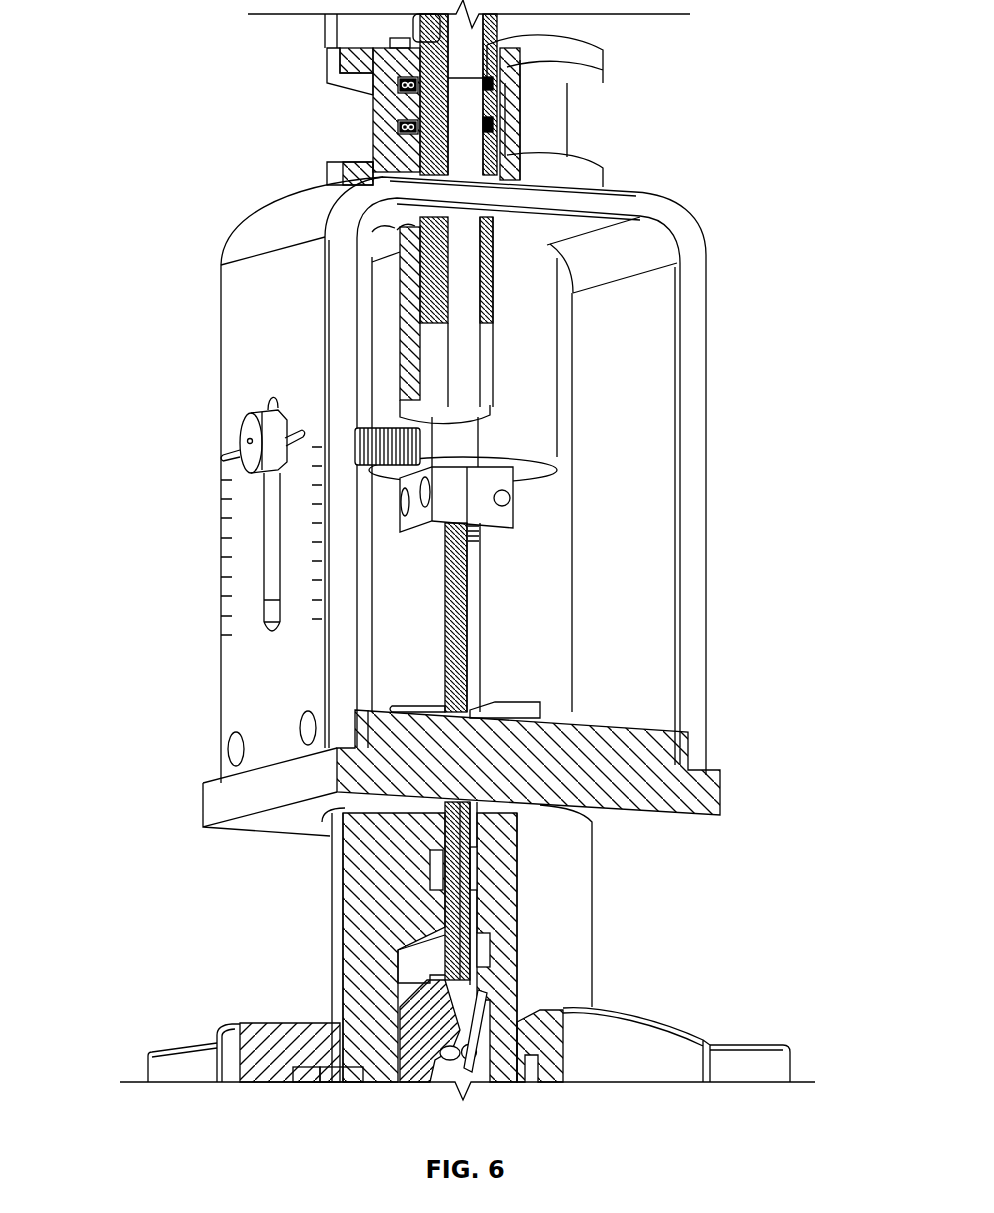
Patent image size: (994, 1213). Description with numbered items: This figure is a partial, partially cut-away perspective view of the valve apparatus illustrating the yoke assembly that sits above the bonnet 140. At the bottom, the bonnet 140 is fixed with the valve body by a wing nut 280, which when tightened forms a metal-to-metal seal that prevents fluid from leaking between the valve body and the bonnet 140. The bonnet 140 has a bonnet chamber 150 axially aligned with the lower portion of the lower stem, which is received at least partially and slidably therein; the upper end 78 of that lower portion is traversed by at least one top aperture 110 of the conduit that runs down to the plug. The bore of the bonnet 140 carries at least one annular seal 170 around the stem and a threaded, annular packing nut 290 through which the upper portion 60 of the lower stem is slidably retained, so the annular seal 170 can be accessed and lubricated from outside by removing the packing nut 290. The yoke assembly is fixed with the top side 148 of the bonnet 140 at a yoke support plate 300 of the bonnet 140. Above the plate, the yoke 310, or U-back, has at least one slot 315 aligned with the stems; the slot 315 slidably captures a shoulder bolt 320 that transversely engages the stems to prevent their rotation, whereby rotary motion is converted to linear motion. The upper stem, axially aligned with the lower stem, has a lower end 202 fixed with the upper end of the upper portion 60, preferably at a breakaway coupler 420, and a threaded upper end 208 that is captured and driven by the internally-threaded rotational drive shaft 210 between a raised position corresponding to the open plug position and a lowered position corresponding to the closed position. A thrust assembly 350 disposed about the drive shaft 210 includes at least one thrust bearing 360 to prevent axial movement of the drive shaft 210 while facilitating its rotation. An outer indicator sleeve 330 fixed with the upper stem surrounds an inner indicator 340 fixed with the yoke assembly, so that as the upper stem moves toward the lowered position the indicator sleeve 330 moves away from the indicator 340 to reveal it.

The upper portion 60 is at (475, 683).
The upper end 78 is at (493, 1017).
The top aperture 110 is at (433, 1050).
The bonnet 140 is at (570, 949).
The top side 148 is at (585, 848).
The bonnet chamber 150 is at (410, 985).
The annular seal 170 is at (436, 870).
The lower end 202 is at (487, 460).
The threaded upper end 208 is at (470, 127).
The rotational drive shaft 210 is at (395, 265).
The wing nut 280 is at (667, 1030).
The packing nut 290 is at (430, 708).
The yoke support plate 300 is at (708, 792).
The yoke 310 is at (240, 702).
The slot 315 is at (270, 538).
The shoulder bolt 320 is at (245, 426).
The indicator sleeve 330 is at (550, 453).
The indicator 340 is at (208, 609).
The thrust assembly 350 is at (556, 128).
The thrust bearing 360 is at (400, 86).
The breakaway coupler 420 is at (505, 503).